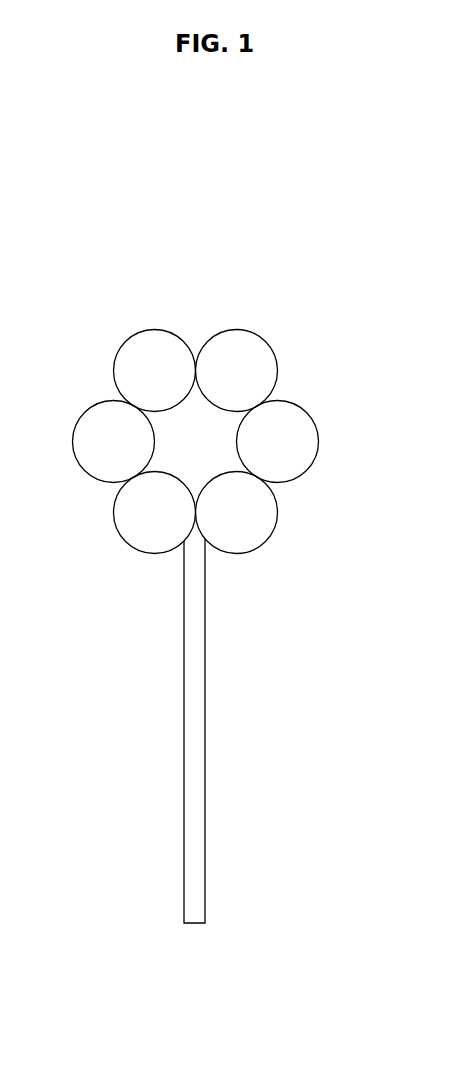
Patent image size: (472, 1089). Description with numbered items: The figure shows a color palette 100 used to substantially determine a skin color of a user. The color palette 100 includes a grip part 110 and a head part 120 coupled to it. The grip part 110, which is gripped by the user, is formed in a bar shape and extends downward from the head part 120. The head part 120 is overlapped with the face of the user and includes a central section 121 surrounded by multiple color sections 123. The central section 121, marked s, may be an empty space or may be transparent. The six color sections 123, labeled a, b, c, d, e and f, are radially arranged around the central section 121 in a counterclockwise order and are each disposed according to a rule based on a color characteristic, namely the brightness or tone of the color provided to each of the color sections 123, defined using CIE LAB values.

The color palette 100 is at (360, 191).
The grip part 110 is at (205, 730).
The head part 120 is at (255, 327).
The central section 121 is at (192, 413).
The color sections 123 is at (120, 362).